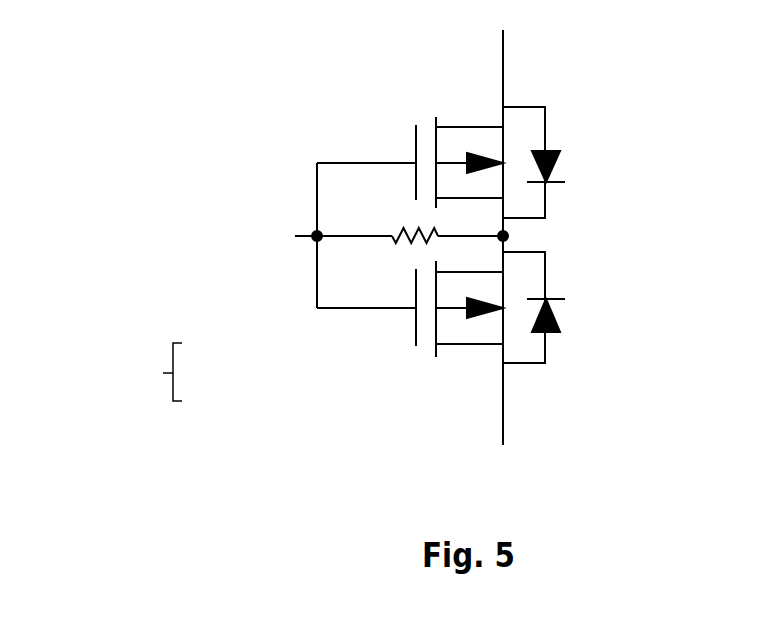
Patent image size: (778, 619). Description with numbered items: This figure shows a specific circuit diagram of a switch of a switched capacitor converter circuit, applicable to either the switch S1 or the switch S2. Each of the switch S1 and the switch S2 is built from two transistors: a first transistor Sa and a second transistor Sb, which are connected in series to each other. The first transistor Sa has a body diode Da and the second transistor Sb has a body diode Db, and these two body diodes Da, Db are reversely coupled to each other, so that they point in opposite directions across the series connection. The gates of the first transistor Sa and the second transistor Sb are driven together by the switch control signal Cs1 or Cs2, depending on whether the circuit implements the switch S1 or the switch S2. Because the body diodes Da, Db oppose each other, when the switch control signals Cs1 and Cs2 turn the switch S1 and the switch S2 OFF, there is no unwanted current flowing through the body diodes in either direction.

The first transistor Sa is at (444, 153).
The second transistor Sb is at (444, 320).
The body diode Da is at (552, 162).
The body diode Db is at (553, 307).
The switch control signal Cs1 is at (340, 238).
The switch control signal Cs2 is at (340, 238).
The switch S1 is at (135, 372).
The switch S2 is at (135, 372).